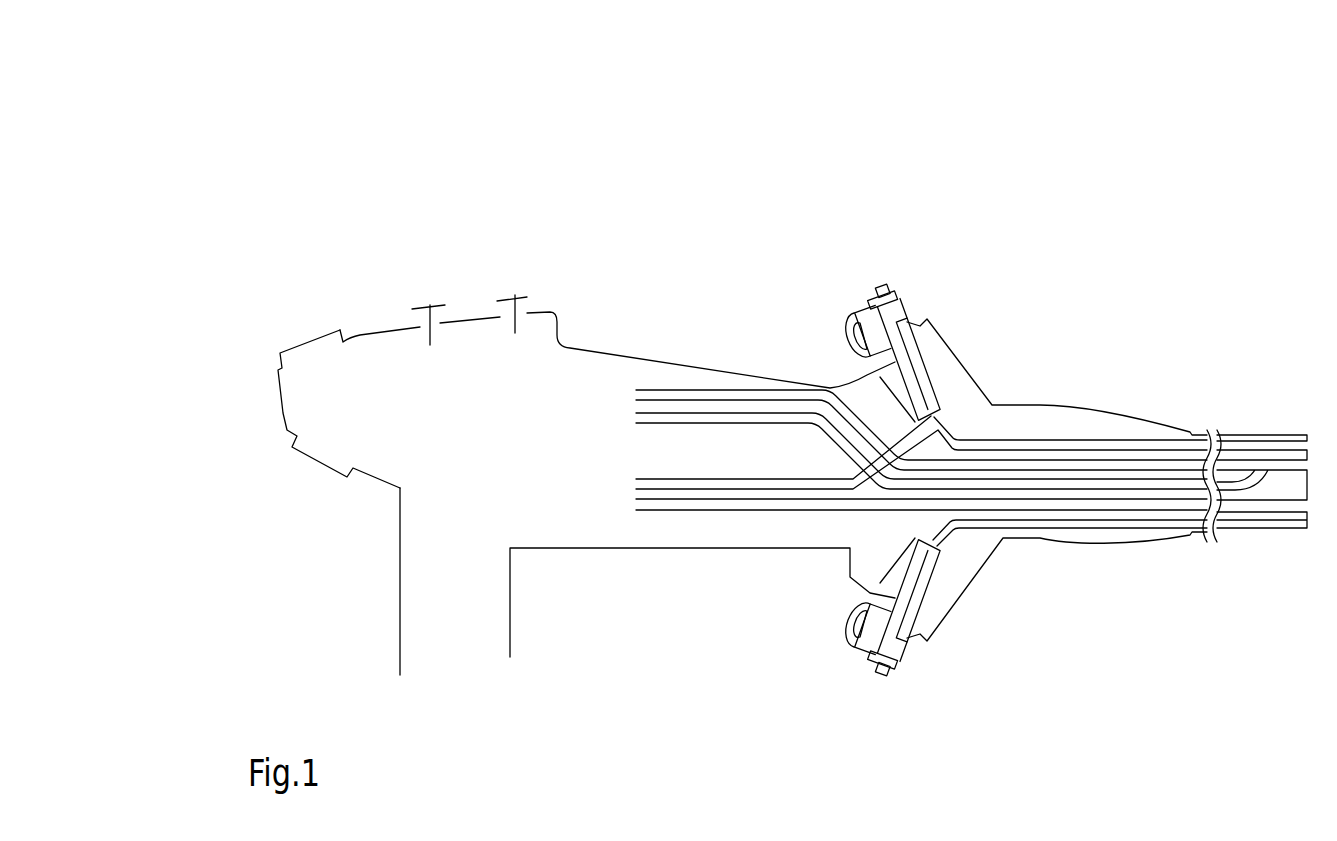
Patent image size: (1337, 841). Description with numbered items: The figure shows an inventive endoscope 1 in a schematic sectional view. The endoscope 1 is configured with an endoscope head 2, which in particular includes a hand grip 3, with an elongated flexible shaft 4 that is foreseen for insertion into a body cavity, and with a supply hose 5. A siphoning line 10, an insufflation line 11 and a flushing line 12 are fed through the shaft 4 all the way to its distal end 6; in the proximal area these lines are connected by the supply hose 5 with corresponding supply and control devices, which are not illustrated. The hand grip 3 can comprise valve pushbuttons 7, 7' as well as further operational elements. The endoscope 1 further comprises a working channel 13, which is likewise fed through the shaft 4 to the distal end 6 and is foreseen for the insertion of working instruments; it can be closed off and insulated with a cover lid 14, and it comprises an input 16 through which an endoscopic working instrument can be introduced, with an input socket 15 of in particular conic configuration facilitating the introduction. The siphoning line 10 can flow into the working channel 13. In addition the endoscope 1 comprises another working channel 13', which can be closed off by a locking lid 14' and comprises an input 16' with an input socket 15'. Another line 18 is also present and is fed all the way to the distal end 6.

The endoscope 1 is at (834, 124).
The endoscope head 2 is at (797, 186).
The hand grip 3 is at (546, 152).
The elongated flexible shaft 4 is at (1237, 160).
The supply hose 5 is at (400, 612).
The distal end 6 is at (1292, 436).
The valve pushbutton 7 is at (428, 271).
The valve pushbutton 7' is at (515, 263).
The siphoning line 10 is at (725, 484).
The insufflation line 11 is at (745, 422).
The flushing line 12 is at (678, 391).
The working channel 13 is at (1204, 366).
The working channel 13' is at (1070, 609).
The cover lid 14 is at (904, 272).
The locking lid 14' is at (899, 654).
The input socket 15 is at (946, 356).
The input socket 15' is at (939, 621).
The input 16 is at (914, 316).
The input 16' is at (837, 596).
The line 18 is at (663, 503).